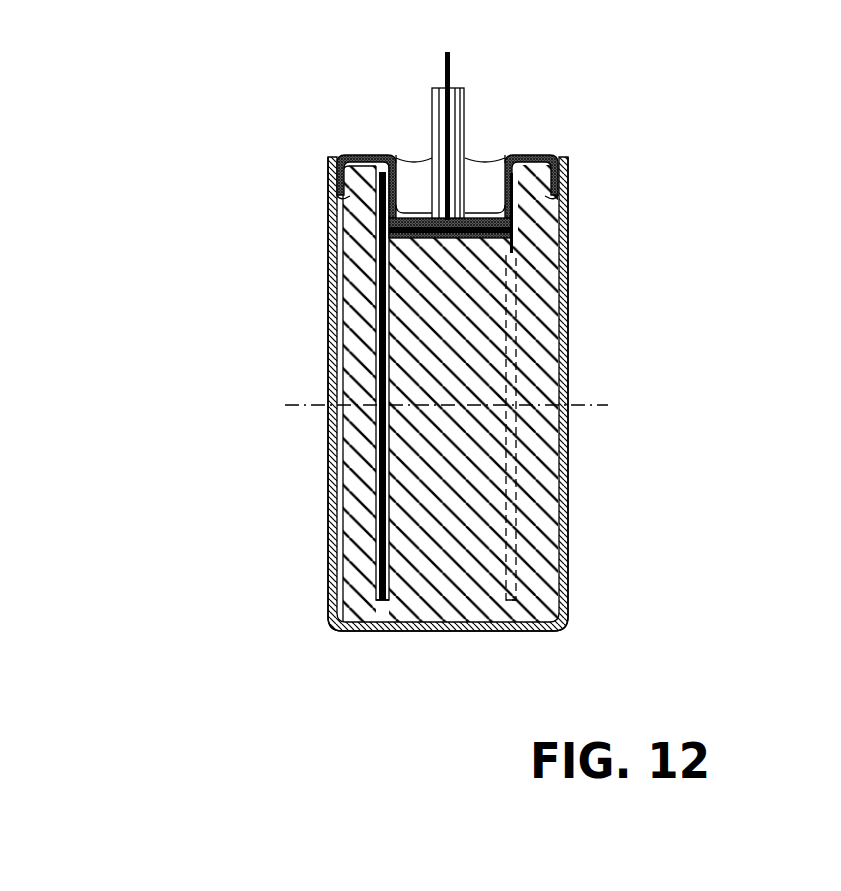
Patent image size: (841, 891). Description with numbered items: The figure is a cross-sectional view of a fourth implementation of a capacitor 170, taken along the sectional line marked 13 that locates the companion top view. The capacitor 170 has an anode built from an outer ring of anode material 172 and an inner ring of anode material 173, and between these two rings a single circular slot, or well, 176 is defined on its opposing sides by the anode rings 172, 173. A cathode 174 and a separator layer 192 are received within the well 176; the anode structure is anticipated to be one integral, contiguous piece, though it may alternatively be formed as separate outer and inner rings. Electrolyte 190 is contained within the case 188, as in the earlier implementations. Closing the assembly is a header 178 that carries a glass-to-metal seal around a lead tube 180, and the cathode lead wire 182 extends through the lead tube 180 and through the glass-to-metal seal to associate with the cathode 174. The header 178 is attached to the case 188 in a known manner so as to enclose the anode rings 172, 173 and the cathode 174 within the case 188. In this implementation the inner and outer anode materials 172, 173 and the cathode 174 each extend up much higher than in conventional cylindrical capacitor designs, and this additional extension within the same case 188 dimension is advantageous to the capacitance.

The capacitor 170 is at (604, 190).
The outer ring of anode material 172 is at (543, 285).
The inner ring of anode material 173 is at (477, 472).
The cathode 174 is at (380, 355).
The circular slot 176 is at (380, 603).
The header 178 is at (553, 149).
The lead tube 180 is at (466, 118).
The cathode lead wire 182 is at (452, 63).
The case 188 is at (566, 368).
The electrolyte 190 is at (342, 176).
The separator layer 192 is at (345, 283).
The section line 13- 13 is at (283, 414).